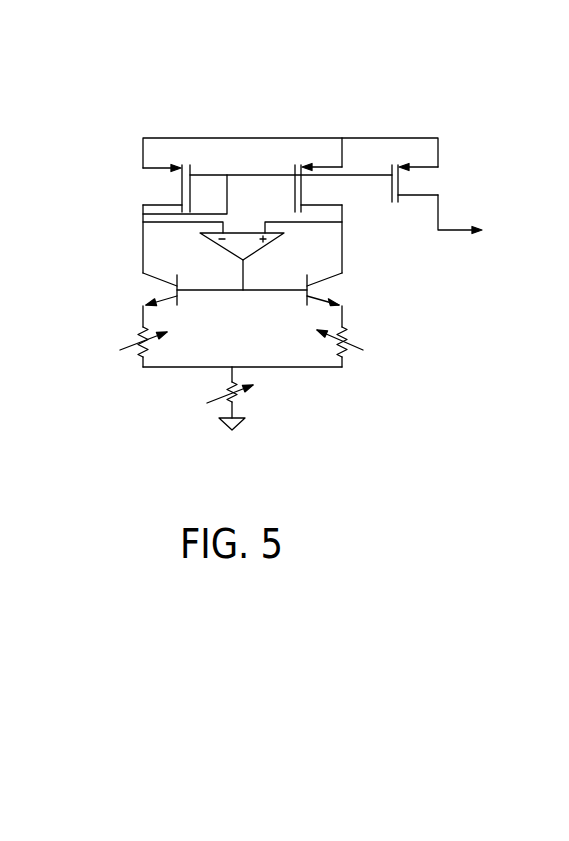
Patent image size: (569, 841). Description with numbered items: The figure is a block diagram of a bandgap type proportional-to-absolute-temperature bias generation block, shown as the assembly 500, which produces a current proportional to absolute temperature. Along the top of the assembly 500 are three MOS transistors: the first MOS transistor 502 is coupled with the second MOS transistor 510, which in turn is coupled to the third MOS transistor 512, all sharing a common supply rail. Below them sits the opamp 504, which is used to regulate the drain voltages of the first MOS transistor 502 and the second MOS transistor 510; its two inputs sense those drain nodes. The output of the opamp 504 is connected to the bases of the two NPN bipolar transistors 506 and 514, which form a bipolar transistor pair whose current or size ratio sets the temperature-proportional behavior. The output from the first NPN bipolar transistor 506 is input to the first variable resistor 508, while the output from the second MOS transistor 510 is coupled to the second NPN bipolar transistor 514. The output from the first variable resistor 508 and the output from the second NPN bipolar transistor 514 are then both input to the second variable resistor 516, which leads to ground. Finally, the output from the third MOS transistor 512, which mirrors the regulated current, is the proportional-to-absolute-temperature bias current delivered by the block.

The assembly 500 is at (115, 105).
The MOS transistor M1 502 is at (133, 182).
The opamp 504 is at (215, 252).
The NPN bipolar transistor 506 is at (98, 287).
The variable resistor 508 is at (87, 348).
The transistor M2 510 is at (347, 186).
The transistor M3 512 is at (460, 178).
The NPN bipolar transistor 514 is at (382, 300).
The variable resistor 516 is at (252, 402).